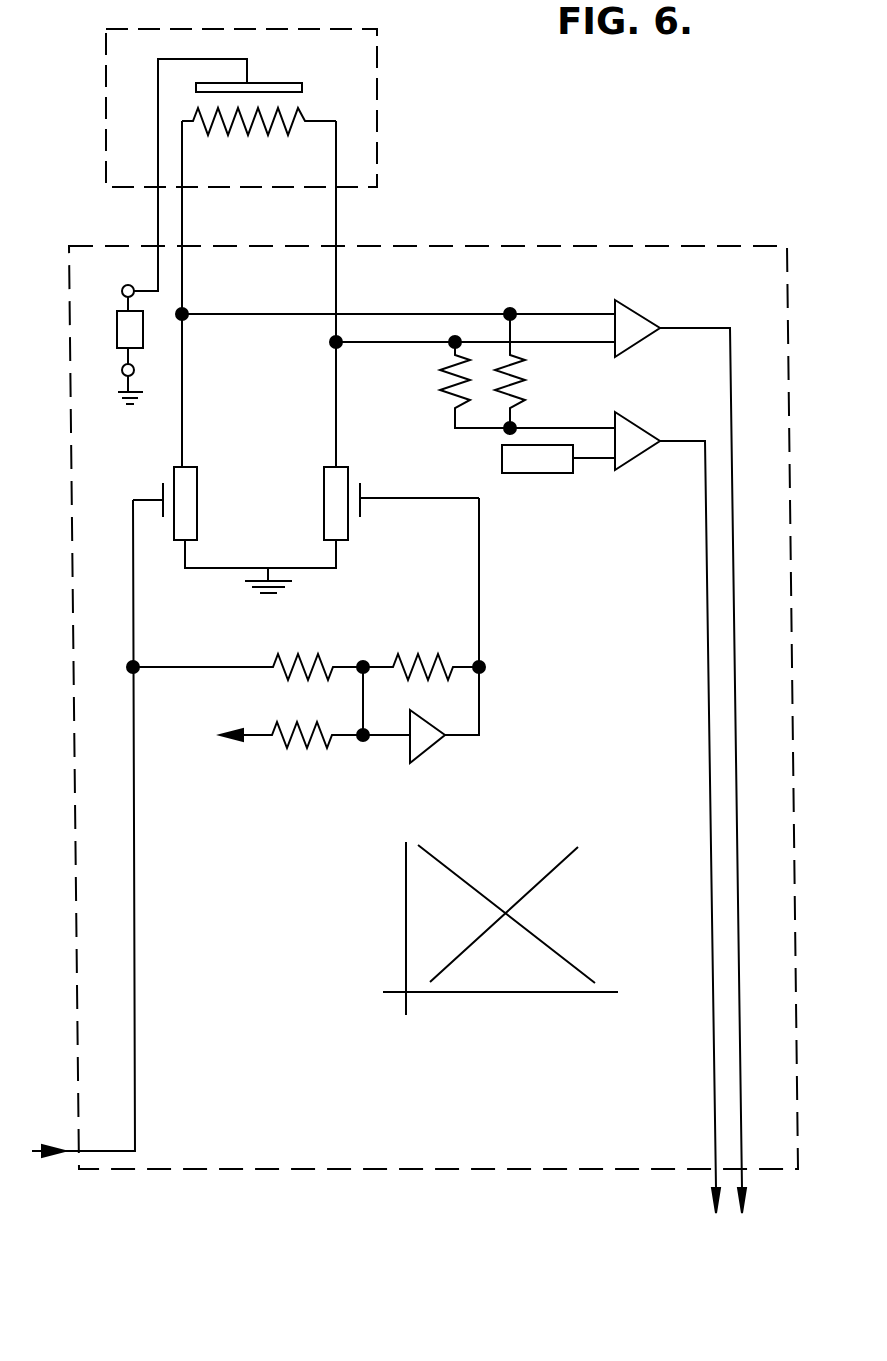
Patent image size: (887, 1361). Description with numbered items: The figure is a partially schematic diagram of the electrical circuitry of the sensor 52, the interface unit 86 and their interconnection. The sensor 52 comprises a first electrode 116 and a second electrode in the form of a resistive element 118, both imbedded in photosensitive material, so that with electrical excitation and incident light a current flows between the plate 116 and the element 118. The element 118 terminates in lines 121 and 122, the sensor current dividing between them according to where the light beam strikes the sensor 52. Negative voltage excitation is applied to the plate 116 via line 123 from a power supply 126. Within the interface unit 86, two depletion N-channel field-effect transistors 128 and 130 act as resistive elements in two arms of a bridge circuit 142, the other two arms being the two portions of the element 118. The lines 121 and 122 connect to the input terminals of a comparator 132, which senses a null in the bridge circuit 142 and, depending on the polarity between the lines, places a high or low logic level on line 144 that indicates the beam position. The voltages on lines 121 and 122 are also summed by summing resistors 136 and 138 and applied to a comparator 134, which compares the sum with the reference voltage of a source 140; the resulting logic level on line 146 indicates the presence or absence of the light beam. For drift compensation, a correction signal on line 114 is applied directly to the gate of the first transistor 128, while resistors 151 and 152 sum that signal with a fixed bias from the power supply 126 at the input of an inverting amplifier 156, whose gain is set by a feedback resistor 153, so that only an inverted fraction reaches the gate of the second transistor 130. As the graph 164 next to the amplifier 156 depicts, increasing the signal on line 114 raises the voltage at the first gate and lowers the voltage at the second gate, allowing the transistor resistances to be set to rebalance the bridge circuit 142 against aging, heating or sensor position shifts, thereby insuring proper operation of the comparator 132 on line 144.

The sensor 52 is at (377, 85).
The first electrode 116 is at (302, 88).
The resistive element 118 is at (256, 128).
The line 121 is at (182, 213).
The line 122 is at (336, 213).
The line 123 is at (157, 208).
The power supply 126 is at (117, 331).
The field-effect transistor 128 is at (197, 488).
The field-effect transistor 130 is at (324, 510).
The comparator 132 is at (640, 310).
The comparator 134 is at (640, 422).
The summing resistor 136 is at (522, 375).
The summing resistor 138 is at (446, 385).
The source of reference voltage 140 is at (538, 473).
The bridge circuit 142 is at (500, 554).
The line 144 is at (743, 1090).
The line 146 is at (714, 1090).
The resistor 151 is at (290, 660).
The resistor 152 is at (310, 745).
The resistor 153 is at (414, 660).
The amplifier 156 is at (440, 750).
The graph 164 is at (510, 896).
The line 114 is at (75, 1153).
The interface unit 86 is at (433, 694).